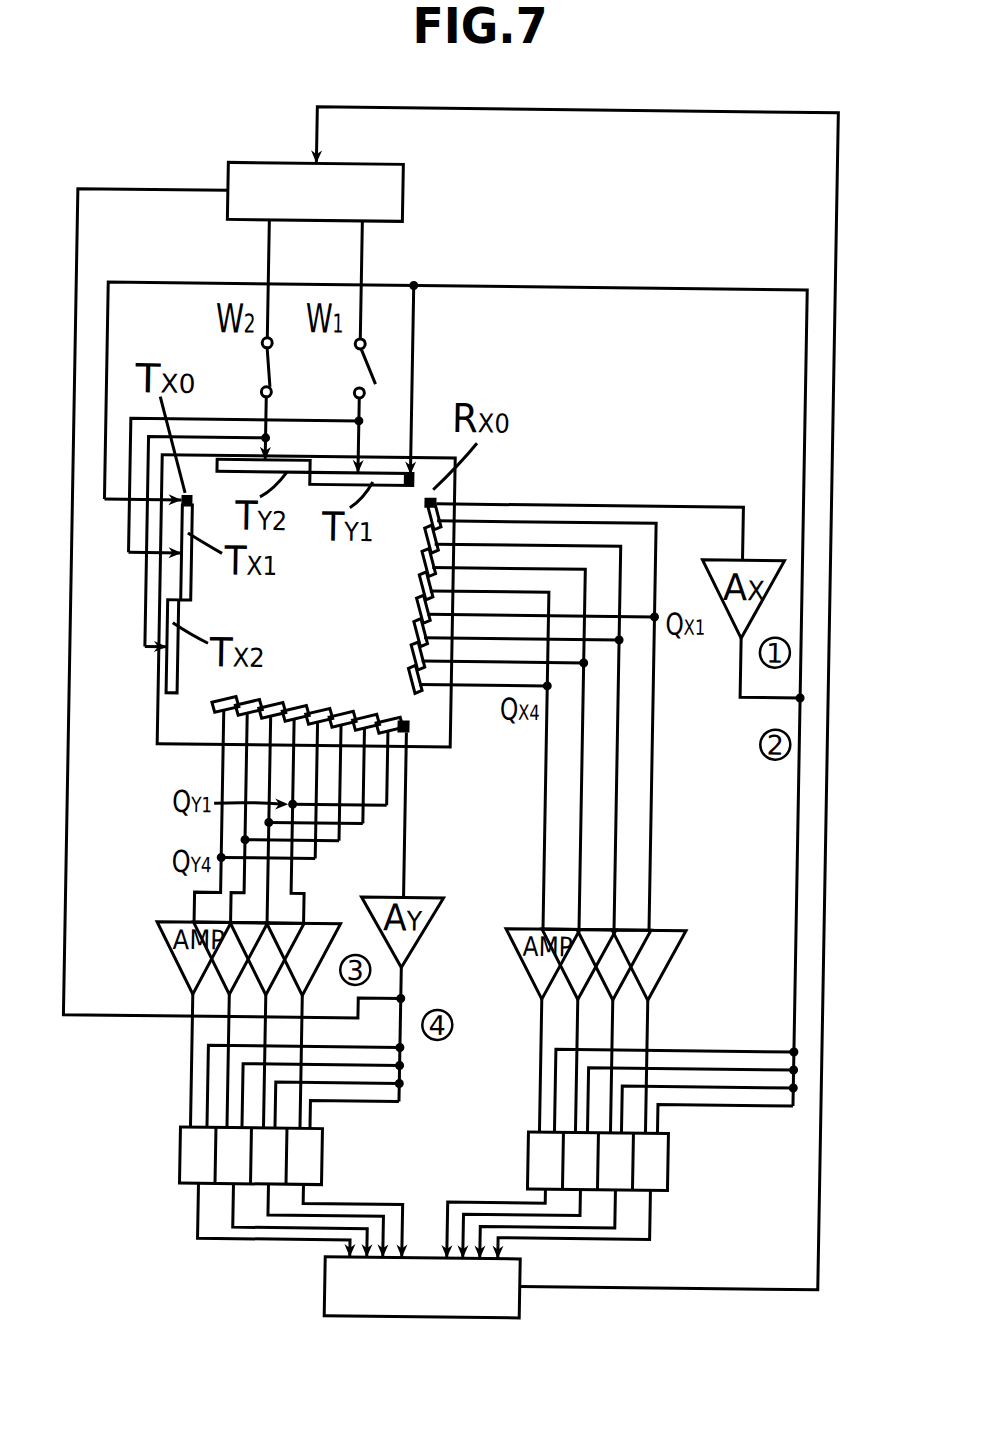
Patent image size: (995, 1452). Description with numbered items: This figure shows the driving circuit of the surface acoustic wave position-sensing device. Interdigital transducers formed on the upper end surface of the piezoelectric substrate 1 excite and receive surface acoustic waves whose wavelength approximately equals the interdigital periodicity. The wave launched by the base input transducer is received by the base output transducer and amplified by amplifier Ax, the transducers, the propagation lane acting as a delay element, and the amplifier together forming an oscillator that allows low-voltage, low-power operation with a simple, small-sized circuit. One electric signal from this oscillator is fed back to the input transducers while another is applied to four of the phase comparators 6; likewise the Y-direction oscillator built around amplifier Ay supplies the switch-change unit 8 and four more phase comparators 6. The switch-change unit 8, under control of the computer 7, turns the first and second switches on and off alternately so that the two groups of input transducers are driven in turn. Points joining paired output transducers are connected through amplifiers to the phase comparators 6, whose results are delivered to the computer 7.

The piezoelectric substrate 1 is at (441, 733).
The phase comparators 6 is at (423, 1159).
The computer 7 is at (422, 1287).
The switch-change unit 8 is at (315, 196).